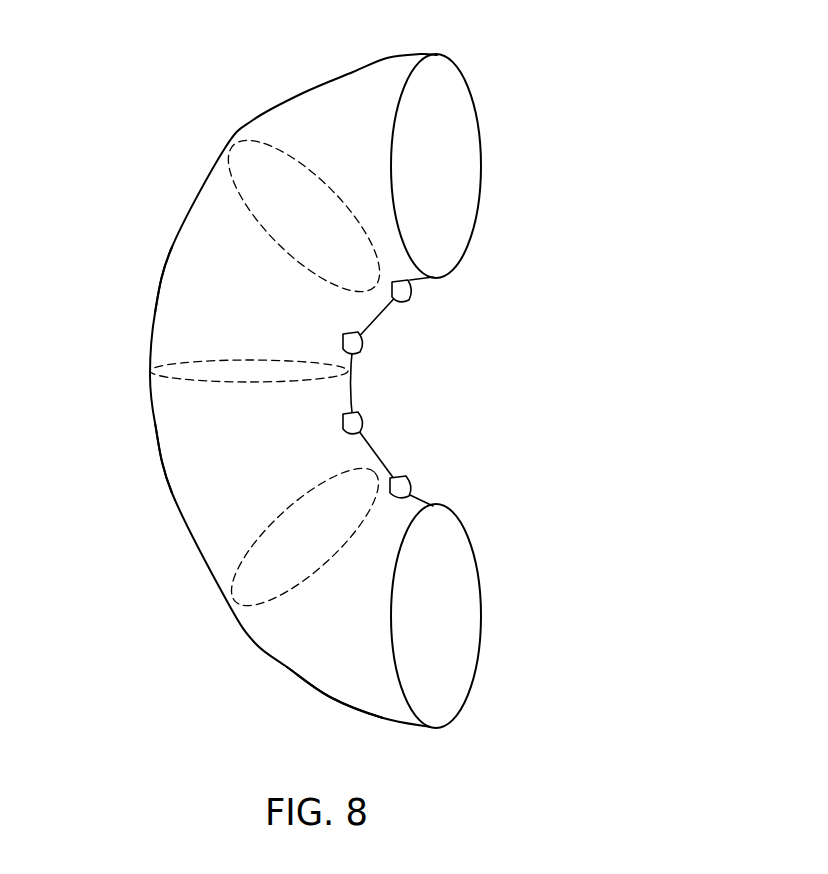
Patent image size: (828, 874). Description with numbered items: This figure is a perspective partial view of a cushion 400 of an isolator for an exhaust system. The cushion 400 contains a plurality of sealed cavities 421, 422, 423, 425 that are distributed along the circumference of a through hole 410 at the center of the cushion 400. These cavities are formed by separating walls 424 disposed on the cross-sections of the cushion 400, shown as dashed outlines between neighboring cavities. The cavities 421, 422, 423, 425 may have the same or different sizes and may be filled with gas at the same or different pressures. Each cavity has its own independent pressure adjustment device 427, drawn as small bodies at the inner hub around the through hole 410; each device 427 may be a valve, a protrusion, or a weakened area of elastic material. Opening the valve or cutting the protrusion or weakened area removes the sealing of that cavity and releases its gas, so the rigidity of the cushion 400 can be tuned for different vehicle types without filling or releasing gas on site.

The cushion 400 is at (595, 521).
The through hole 410 is at (448, 370).
The sealed cavity 421 is at (334, 104).
The sealed cavity 422 is at (190, 273).
The sealed cavity 423 is at (190, 470).
The separating walls 424 is at (235, 150).
The sealed cavity 425 is at (325, 670).
The pressure adjustment device 427 is at (410, 293).